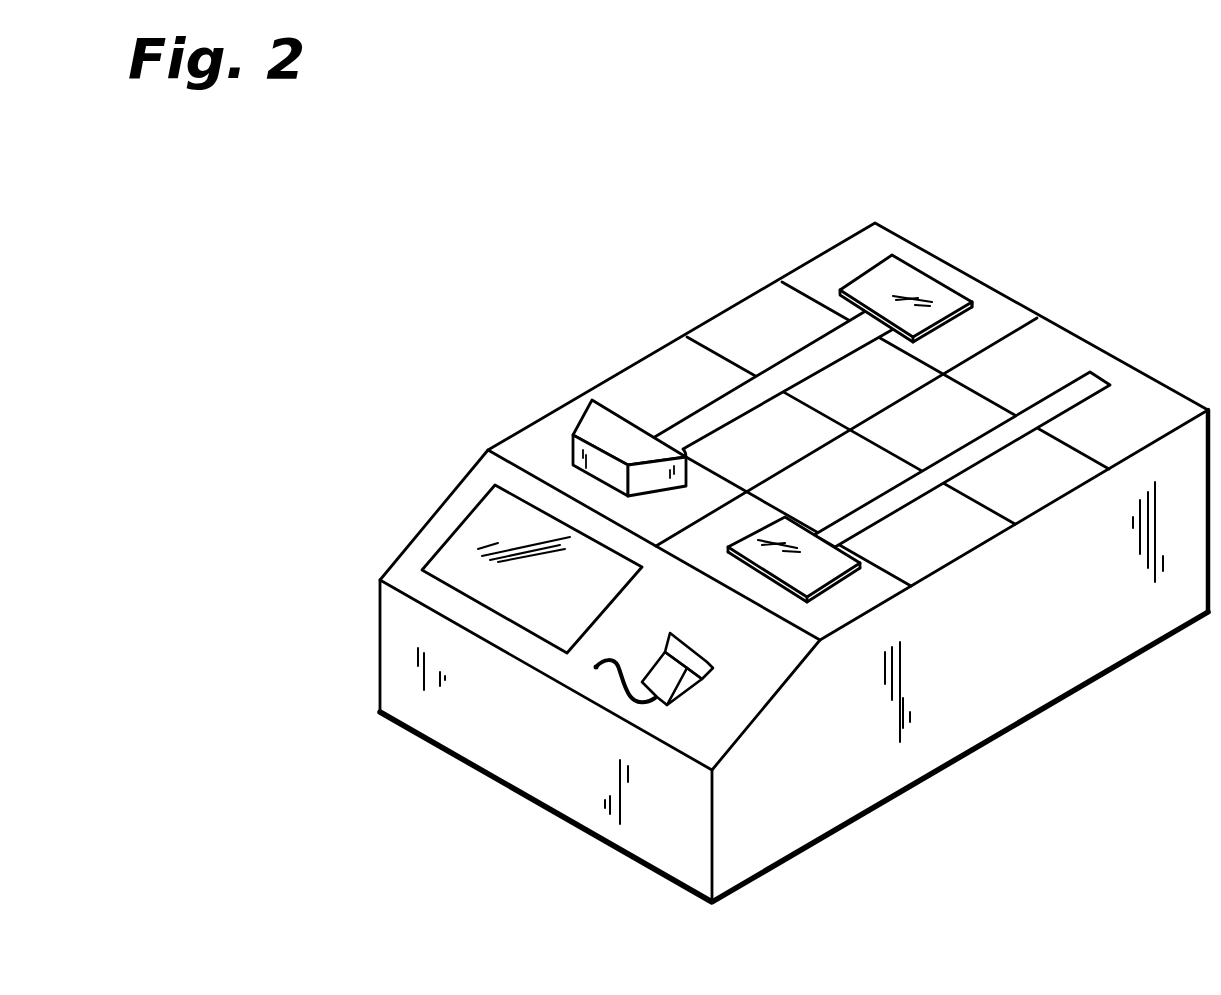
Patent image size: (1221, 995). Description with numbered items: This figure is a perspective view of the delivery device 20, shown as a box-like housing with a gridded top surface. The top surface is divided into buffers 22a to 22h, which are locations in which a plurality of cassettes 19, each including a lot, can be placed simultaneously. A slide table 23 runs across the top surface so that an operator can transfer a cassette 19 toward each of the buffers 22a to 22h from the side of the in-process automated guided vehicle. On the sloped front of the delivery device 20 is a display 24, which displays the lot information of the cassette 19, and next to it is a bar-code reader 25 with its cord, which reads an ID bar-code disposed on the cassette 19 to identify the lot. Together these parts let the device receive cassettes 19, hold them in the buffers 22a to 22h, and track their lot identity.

The cassette 19 is at (607, 437).
The delivery device 20 is at (1138, 372).
The buffer 22a is at (880, 390).
The buffer 22h is at (882, 434).
The slide table 23 is at (897, 292).
The display 24 is at (467, 570).
The bar-code reader 25 is at (690, 687).